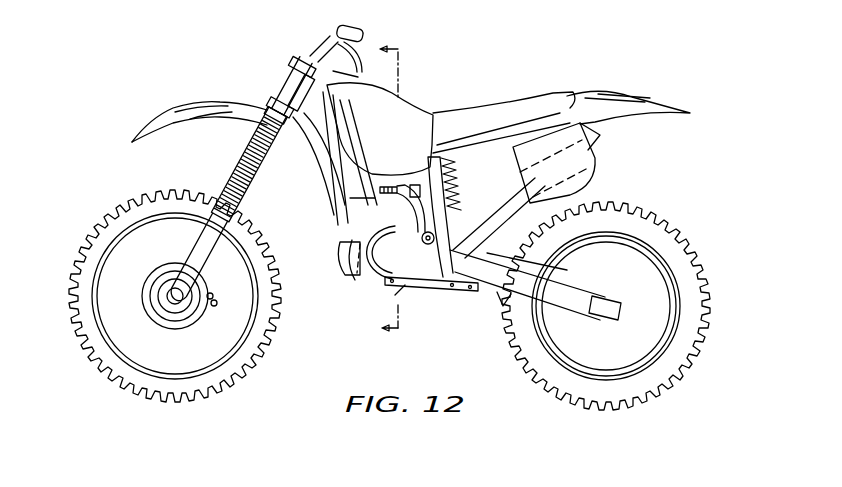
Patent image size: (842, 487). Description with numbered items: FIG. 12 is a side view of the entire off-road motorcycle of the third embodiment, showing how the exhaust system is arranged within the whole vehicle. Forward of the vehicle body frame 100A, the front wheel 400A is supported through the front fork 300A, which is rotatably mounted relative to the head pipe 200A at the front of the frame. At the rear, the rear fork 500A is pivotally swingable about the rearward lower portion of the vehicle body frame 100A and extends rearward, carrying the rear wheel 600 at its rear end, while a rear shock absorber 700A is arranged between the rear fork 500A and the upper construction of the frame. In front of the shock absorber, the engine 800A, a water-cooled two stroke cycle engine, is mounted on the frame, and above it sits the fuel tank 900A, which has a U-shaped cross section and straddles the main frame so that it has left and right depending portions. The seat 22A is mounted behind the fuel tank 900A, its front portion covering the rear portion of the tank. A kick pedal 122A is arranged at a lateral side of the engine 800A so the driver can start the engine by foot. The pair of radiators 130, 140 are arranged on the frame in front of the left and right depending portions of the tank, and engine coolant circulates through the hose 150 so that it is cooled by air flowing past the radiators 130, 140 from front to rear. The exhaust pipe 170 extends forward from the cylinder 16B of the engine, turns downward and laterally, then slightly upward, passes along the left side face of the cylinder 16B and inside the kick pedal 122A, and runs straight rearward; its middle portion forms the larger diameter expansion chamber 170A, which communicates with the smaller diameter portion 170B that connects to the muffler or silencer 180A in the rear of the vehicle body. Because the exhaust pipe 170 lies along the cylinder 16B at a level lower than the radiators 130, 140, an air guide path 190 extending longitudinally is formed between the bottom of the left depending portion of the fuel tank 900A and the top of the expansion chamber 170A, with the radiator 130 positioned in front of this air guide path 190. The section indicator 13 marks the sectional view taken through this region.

The section line 13- 13 is at (405, 189).
The seat 22A is at (433, 115).
The fuel tank 900A is at (390, 113).
The rear shock absorber 700A is at (447, 148).
The muffler or silencer 180A is at (590, 153).
The air guide path 190 is at (417, 148).
The hose 150 is at (322, 173).
The radiator 130 is at (367, 203).
The radiator 140 is at (363, 152).
The cylinder 16B is at (350, 247).
The exhaust pipe 170 is at (340, 260).
The expansion chamber 170A is at (362, 292).
The smaller diameter portion 170B is at (540, 230).
The vehicle body frame 100A is at (403, 262).
The engine 800A is at (395, 295).
The kick pedal 122A is at (417, 290).
The rear fork 500A is at (525, 312).
The head pipe 200A is at (292, 84).
The front fork 300A is at (207, 263).
The front wheel 400A is at (205, 380).
The rear wheel 600 is at (680, 342).